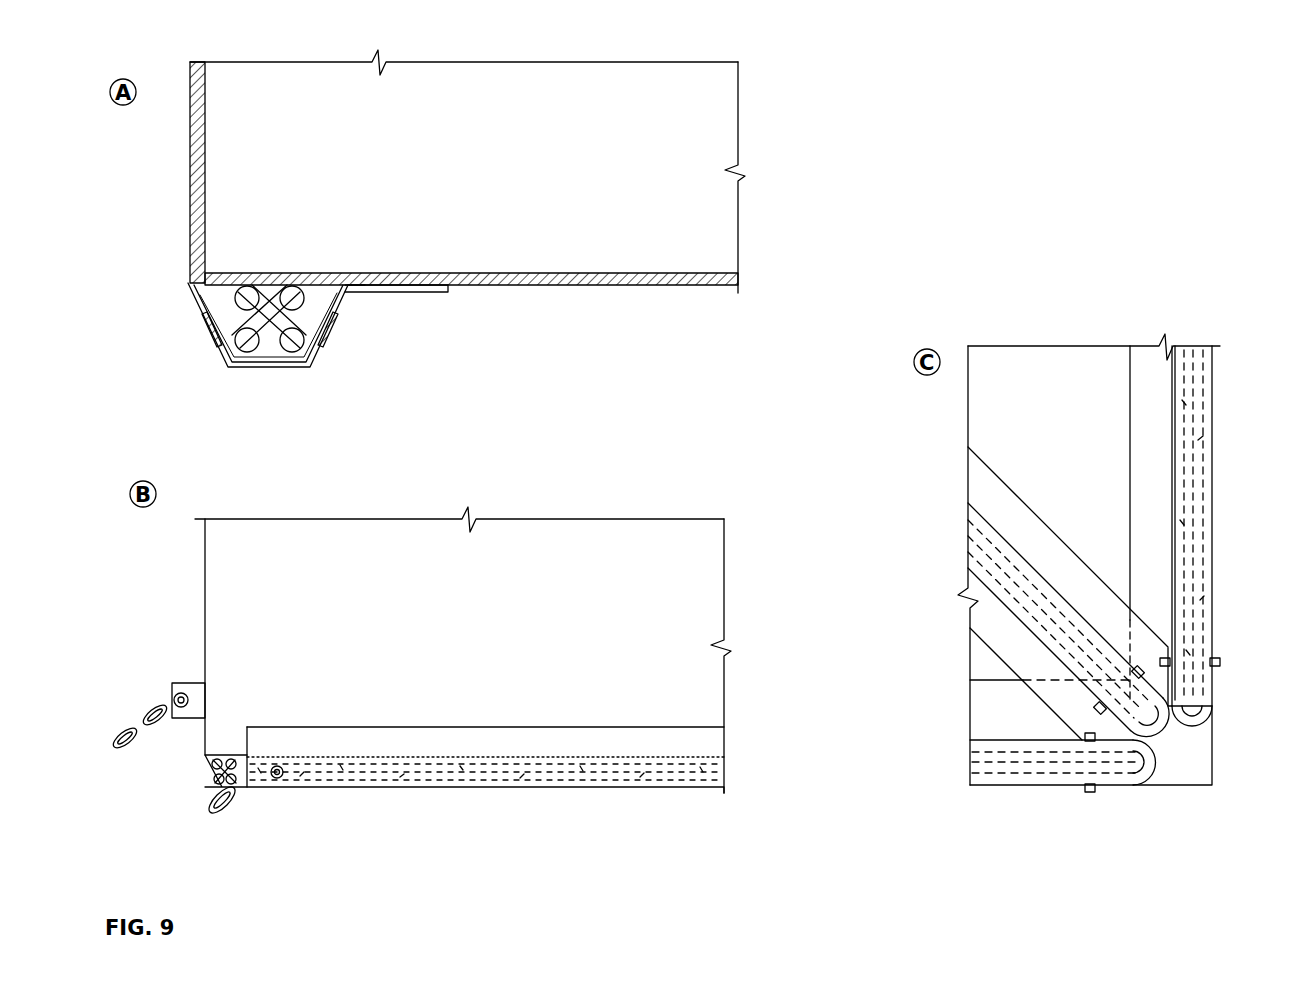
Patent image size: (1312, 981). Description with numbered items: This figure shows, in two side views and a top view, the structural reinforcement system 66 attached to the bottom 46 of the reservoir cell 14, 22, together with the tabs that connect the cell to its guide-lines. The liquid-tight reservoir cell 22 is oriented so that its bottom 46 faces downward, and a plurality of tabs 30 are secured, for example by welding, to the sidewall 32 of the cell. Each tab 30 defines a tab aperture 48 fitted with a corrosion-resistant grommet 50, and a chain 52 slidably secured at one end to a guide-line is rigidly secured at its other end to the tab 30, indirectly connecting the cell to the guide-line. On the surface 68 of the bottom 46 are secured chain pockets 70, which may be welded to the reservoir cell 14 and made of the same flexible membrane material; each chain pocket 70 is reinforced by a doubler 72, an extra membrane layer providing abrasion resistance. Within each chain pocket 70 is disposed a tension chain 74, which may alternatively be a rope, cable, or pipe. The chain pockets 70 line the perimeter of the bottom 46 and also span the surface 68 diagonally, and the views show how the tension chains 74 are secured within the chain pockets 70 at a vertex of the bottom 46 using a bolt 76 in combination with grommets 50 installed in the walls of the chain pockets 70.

The reservoir cell 14 is at (210, 178).
The reservoir cell 22 is at (195, 212).
The tab 30 is at (196, 688).
The sidewall 32 is at (190, 75).
The bottom 46 is at (515, 274).
The tab aperture 48 is at (185, 725).
The grommet 50 is at (177, 697).
The chain 52 is at (150, 715).
The structural reinforcement system 66 is at (605, 343).
The surface 68 is at (488, 292).
The chain pocket 70 is at (225, 322).
The doubler 72 is at (318, 330).
The tension chain 74 is at (262, 335).
The bolt 76 is at (279, 766).